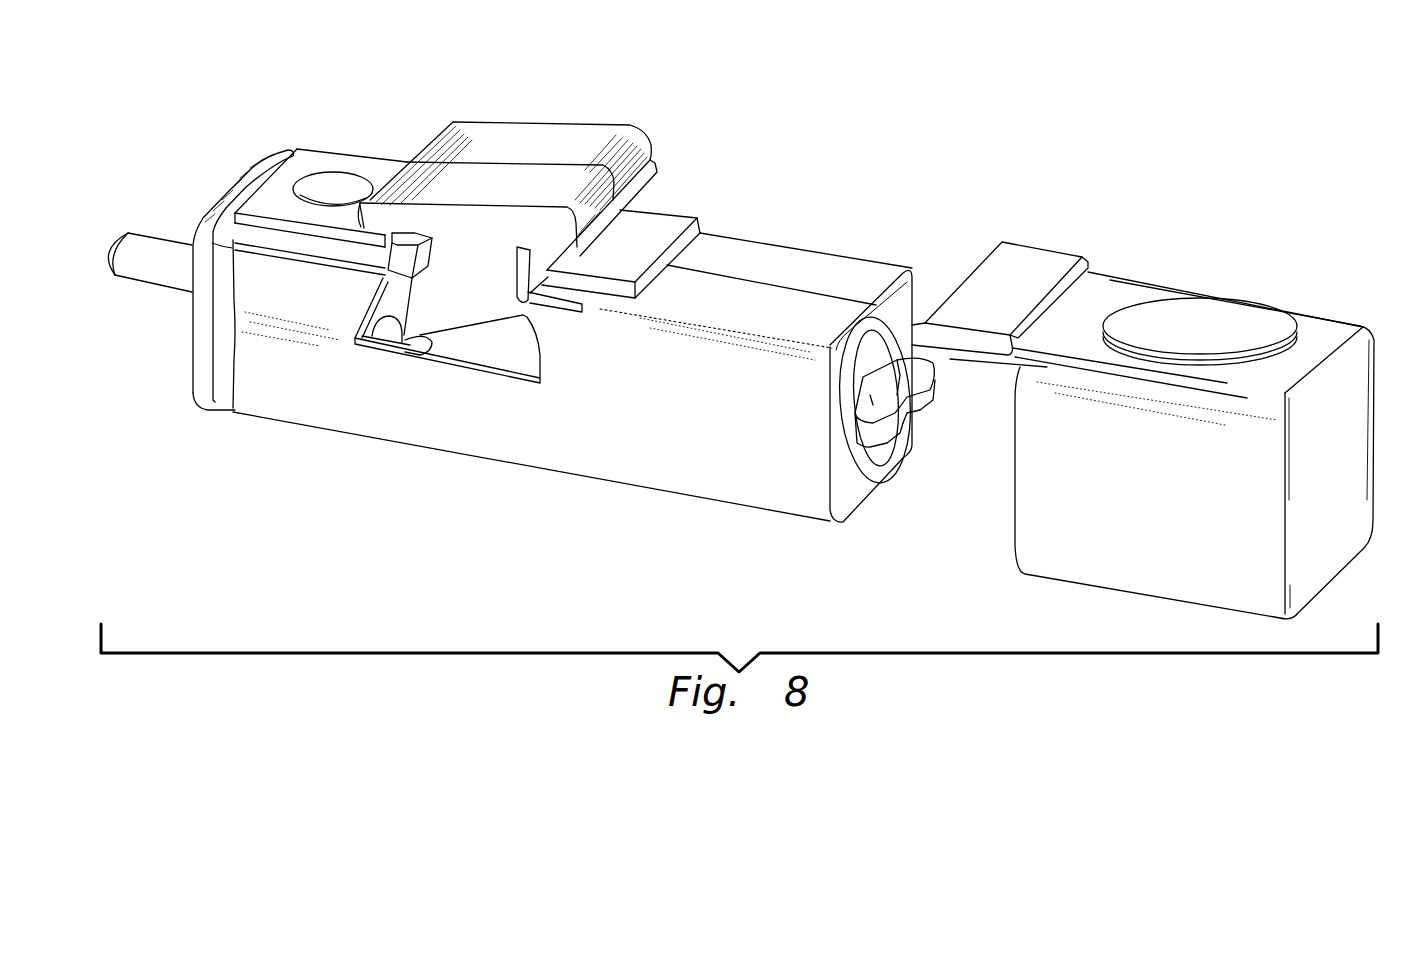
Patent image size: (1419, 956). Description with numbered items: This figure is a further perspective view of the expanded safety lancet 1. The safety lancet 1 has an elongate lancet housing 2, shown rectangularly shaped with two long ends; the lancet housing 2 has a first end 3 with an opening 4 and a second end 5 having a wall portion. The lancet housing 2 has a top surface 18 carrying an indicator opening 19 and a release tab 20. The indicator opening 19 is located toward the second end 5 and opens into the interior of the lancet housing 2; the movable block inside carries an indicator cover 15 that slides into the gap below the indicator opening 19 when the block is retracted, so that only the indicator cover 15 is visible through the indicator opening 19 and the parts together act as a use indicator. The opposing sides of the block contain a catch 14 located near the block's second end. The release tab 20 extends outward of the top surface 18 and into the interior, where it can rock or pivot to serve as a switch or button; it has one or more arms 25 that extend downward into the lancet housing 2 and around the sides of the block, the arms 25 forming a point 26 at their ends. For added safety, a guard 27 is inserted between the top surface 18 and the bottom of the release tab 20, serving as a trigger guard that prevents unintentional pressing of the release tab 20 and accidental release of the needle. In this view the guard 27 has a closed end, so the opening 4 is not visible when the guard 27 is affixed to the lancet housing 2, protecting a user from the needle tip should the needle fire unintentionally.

The safety lancet 1 is at (835, 123).
The lancet housing 2 is at (820, 280).
The first end 3 is at (908, 345).
The opening 4 is at (913, 327).
The second end 5 is at (235, 182).
The catch 14 is at (387, 337).
The indicator cover 15 is at (325, 197).
The top surface 18 is at (317, 163).
The indicator opening 19 is at (358, 182).
The release tab 20 is at (580, 143).
The arms 25 is at (453, 280).
The point 26 is at (412, 333).
The guard 27 is at (1113, 297).